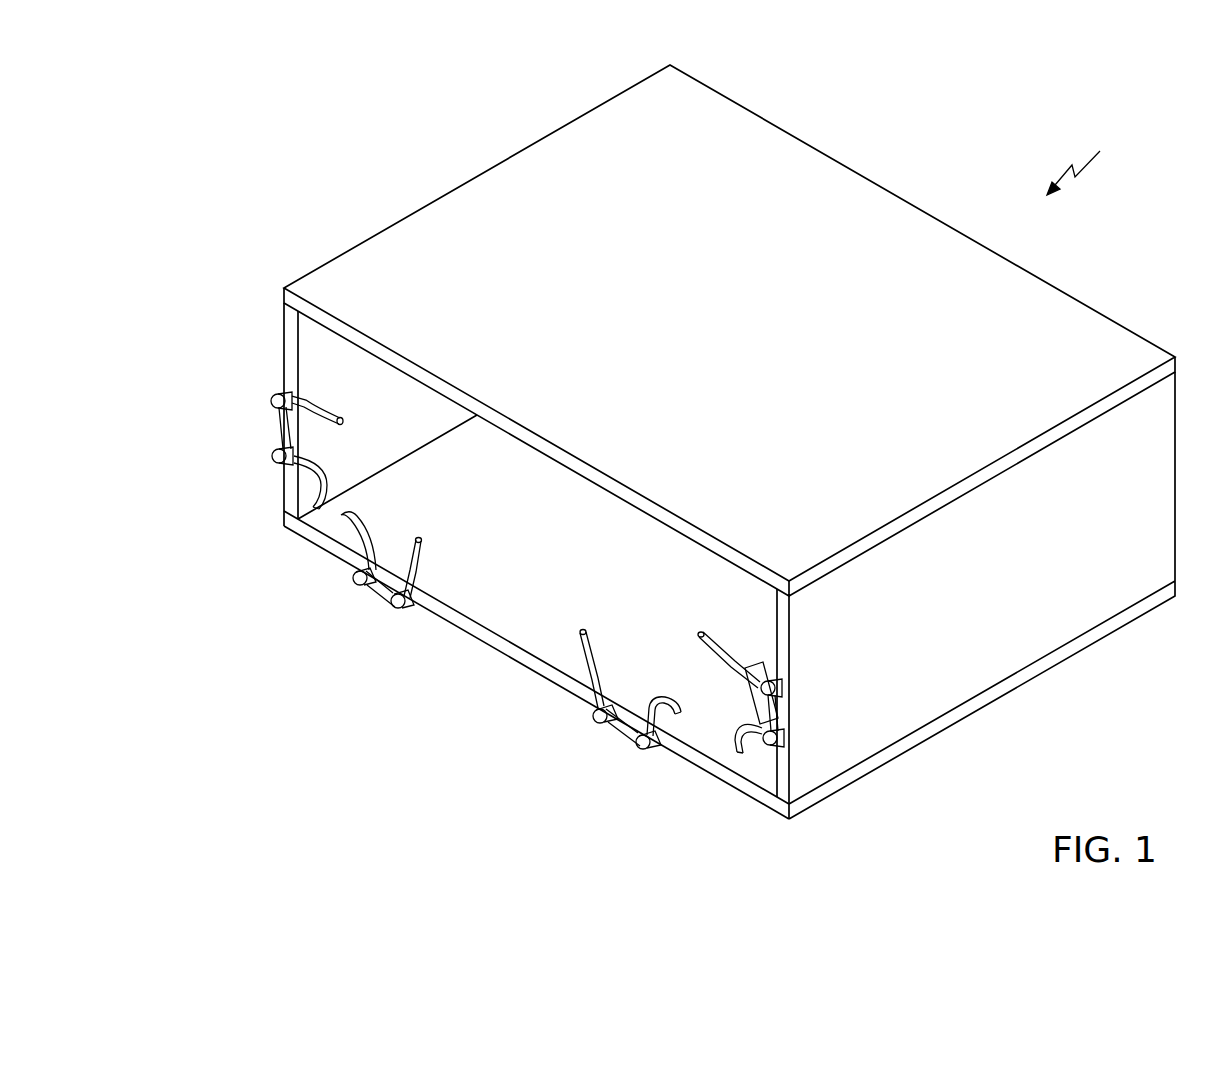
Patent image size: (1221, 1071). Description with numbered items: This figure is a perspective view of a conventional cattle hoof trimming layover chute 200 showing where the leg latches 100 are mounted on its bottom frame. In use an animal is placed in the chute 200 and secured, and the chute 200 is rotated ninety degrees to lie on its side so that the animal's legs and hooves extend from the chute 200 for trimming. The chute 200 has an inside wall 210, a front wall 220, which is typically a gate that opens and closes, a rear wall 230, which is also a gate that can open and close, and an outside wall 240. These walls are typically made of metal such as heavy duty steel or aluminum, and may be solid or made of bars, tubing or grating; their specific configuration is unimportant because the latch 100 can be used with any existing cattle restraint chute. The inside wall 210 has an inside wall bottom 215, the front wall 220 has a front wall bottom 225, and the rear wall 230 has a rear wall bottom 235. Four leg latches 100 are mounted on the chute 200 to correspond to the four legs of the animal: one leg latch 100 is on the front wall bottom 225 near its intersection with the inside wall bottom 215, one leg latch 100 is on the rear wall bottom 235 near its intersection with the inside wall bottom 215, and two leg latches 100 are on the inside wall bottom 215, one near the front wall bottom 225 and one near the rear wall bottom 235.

The layover chute 200 is at (1089, 161).
The outside wall 240 is at (456, 226).
The rear wall 230 is at (310, 333).
The rear wall bottom 235 is at (292, 378).
The front wall 220 is at (1020, 652).
The front wall bottom 225 is at (795, 778).
The inside wall 210 is at (483, 578).
The inside wall bottom 215 is at (508, 650).
The leg latch 100 is at (270, 460).